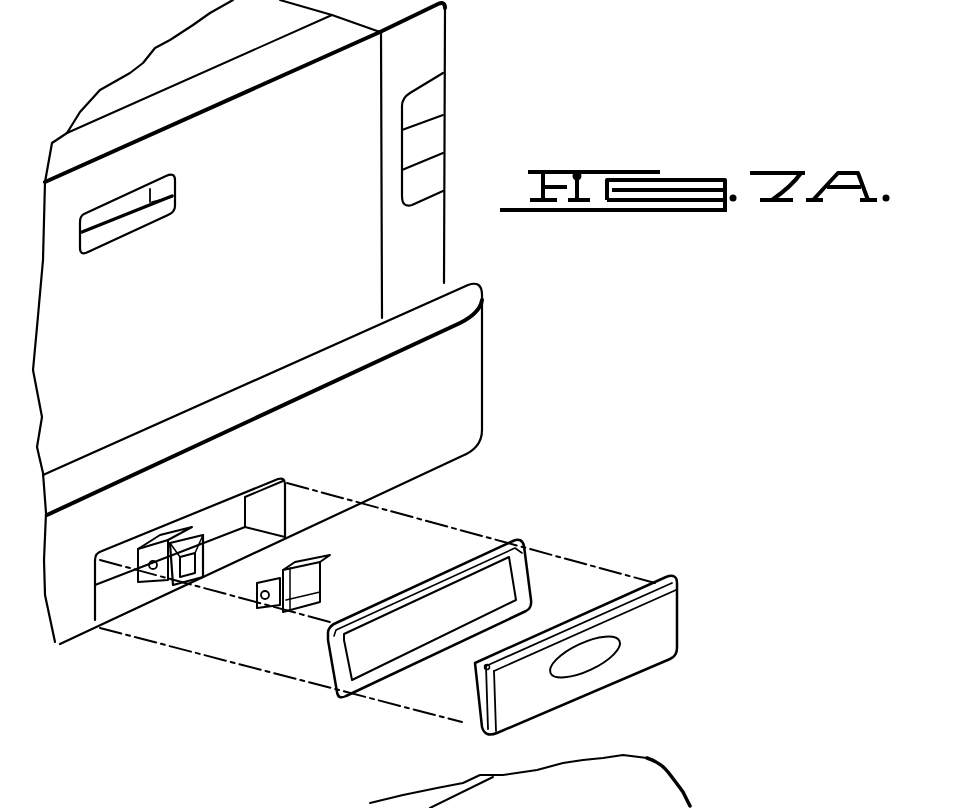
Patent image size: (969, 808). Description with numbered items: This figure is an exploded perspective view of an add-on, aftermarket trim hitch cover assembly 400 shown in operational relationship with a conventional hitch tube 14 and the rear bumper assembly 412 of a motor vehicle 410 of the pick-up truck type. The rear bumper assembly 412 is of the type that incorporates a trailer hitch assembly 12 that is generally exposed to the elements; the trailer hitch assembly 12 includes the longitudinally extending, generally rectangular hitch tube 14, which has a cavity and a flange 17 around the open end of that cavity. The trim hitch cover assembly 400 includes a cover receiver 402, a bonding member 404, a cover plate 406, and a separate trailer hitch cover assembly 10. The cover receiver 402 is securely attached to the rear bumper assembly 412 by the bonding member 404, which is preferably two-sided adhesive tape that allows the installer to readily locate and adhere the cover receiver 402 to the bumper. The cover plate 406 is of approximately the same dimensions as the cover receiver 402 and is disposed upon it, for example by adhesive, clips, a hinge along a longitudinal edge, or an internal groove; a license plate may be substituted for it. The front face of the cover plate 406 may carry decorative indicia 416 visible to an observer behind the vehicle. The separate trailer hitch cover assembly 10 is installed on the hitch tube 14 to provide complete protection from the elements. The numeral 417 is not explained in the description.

The motor vehicle 410 is at (450, 200).
The rear bumper assembly 412 is at (498, 371).
The lower console panel 417 is at (690, 796).
The trim hitch cover assembly 400 is at (623, 542).
The cover receiver 402 is at (478, 707).
The bonding member 404 is at (473, 563).
The cover plate 406 is at (663, 620).
The indicia 416 is at (613, 642).
The hitch tube 14 is at (143, 558).
The flange 17 is at (193, 546).
The trailer hitch assembly 12 is at (150, 578).
The trailer hitch cover assembly 10 is at (283, 615).